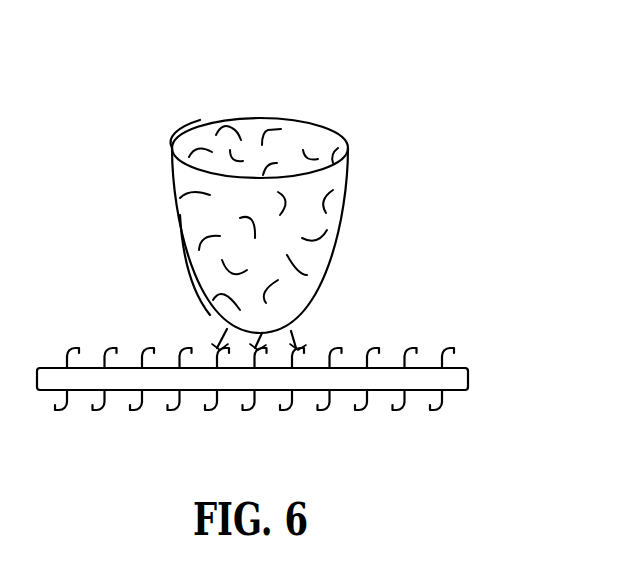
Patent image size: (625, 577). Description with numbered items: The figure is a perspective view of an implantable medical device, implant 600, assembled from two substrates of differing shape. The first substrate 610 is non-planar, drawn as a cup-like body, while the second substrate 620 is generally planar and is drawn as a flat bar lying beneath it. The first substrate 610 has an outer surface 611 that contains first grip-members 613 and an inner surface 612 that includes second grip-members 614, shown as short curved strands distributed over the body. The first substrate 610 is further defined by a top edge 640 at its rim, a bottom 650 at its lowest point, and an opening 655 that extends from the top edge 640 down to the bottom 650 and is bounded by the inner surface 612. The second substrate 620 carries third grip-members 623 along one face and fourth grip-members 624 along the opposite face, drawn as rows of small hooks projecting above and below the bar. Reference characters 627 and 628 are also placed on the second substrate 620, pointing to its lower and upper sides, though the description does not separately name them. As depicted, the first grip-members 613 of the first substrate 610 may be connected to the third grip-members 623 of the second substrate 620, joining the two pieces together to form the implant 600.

The implant 600 is at (189, 70).
The first substrate 610 is at (348, 197).
The outer surface 611 is at (192, 258).
The inner surface 612 is at (338, 148).
The first grip-members 613 is at (182, 197).
The second grip-members 614 is at (318, 153).
The second substrate 620 is at (470, 377).
The third grip-members 623 is at (453, 346).
The fourth grip-members 624 is at (437, 408).
The bottom surface of support bar 627 is at (418, 391).
The top surface of support bar 628 is at (420, 367).
The top edge 640 is at (172, 148).
The bottom 650 is at (210, 168).
The opening 655 is at (253, 158).